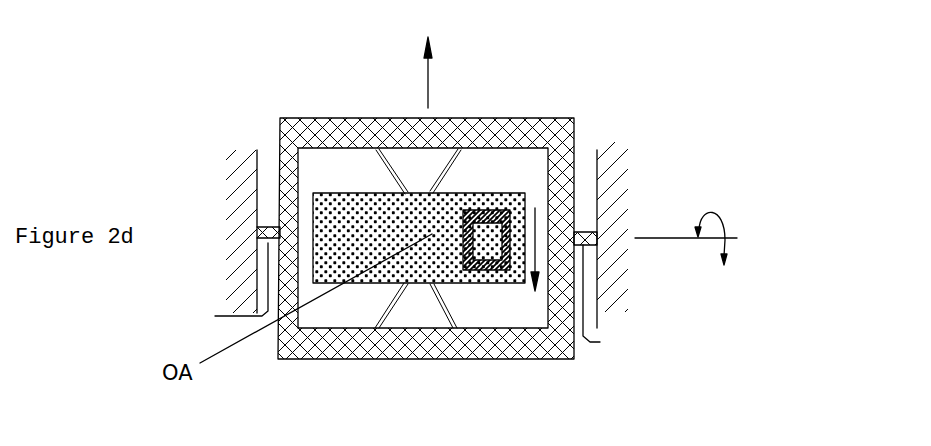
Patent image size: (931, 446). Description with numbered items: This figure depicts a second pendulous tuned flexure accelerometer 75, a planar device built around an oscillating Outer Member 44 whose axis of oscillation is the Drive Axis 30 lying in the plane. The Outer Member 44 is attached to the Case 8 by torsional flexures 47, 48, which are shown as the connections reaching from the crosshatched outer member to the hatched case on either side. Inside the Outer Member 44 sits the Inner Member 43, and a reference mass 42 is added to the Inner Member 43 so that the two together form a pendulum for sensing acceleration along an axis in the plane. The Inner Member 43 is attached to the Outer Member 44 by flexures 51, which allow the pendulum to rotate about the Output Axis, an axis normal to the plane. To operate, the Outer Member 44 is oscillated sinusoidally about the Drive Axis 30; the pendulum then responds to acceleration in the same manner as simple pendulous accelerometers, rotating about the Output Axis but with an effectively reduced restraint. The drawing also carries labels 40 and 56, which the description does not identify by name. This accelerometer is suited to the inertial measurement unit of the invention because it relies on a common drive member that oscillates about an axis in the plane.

The Case 8 is at (635, 175).
The Drive Axis 30 is at (665, 232).
The acceleration axis arrow 40 is at (410, 76).
The reference mass 42 is at (493, 213).
The Inner Member 43 is at (425, 267).
The Outer Member 44 is at (350, 126).
The torsional flexure 47 is at (600, 342).
The torsional flexure 48 is at (231, 234).
The flexures 51 is at (453, 302).
The movable plate 56 is at (350, 204).
The second pendulous TFA accelerometer 75 is at (710, 63).